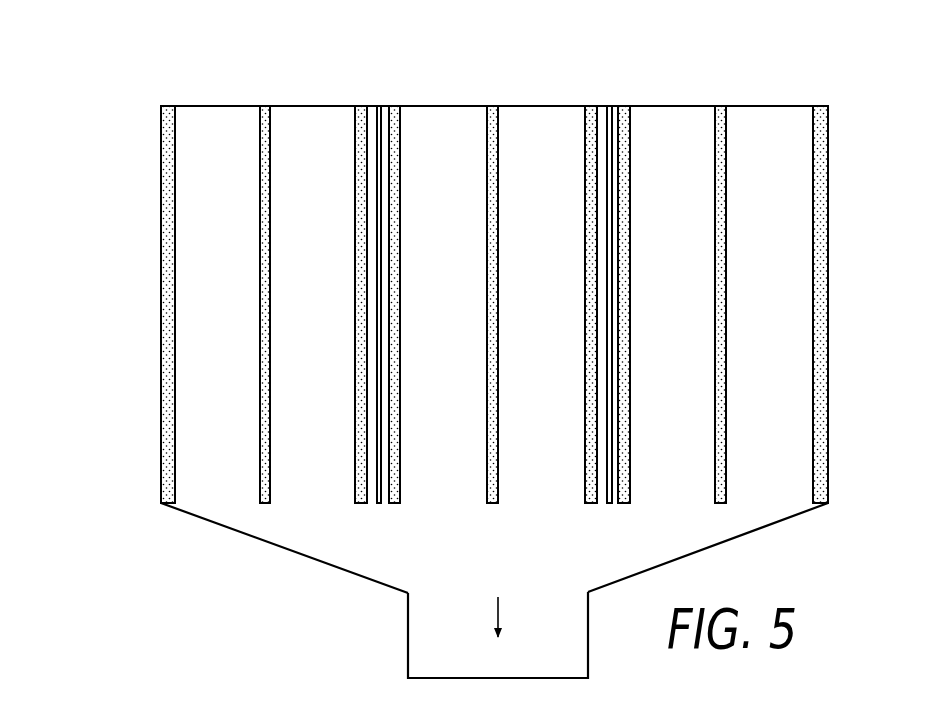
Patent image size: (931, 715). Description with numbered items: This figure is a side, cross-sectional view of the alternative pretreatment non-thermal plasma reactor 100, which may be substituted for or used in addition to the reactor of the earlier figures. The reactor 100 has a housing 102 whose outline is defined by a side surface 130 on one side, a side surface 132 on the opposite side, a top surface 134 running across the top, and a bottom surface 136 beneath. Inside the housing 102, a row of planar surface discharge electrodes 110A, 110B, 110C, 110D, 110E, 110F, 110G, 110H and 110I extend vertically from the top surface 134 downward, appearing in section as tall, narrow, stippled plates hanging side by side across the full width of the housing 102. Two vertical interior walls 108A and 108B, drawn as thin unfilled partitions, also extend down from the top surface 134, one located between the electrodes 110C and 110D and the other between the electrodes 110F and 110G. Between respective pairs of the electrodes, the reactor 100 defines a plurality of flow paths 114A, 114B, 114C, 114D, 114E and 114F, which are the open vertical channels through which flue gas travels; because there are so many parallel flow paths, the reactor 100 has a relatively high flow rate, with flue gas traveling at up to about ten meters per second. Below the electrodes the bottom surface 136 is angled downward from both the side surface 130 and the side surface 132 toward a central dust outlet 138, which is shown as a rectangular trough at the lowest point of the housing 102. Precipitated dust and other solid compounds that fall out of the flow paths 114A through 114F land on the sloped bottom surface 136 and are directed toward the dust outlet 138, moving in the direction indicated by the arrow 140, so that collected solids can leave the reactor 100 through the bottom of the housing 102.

The reactor 100 is at (112, 114).
The housing 102 is at (150, 214).
The vertical interior wall 108A is at (378, 106).
The vertical interior wall 108B is at (607, 106).
The planar surface discharge electrode 110A is at (175, 118).
The planar surface discharge electrode 110B is at (260, 124).
The planar surface discharge electrode 110C is at (355, 120).
The planar surface discharge electrode 110D is at (400, 130).
The planar surface discharge electrode 110E is at (498, 124).
The planar surface discharge electrode 110F is at (585, 128).
The planar surface discharge electrode 110G is at (630, 124).
The planar surface discharge electrode 110H is at (715, 124).
The planar surface discharge electrode 110I is at (813, 124).
The flow path 114A is at (240, 355).
The flow path 114B is at (334, 319).
The flow path 114C is at (465, 334).
The flow path 114D is at (569, 306).
The flow path 114E is at (695, 336).
The flow path 114F is at (797, 346).
The side surface 130 is at (161, 330).
The side surface 132 is at (828, 232).
The top surface 134 is at (453, 106).
The bottom surface 136 is at (298, 552).
The dust outlet 138 is at (412, 678).
The arrow 140 is at (504, 609).